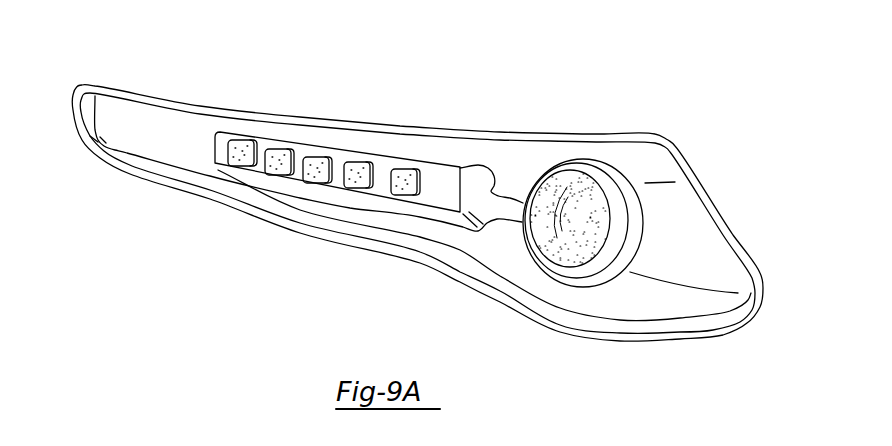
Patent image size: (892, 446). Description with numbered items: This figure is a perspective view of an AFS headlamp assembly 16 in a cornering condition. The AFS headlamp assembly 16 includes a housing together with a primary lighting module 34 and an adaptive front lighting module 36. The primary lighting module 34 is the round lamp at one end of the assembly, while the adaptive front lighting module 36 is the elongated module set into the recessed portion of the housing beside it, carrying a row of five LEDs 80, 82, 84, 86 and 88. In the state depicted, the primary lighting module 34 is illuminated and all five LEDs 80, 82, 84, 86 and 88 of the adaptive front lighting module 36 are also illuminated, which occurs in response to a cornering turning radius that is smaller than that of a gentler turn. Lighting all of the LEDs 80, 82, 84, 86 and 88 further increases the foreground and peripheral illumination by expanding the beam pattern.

The AFS headlamp assembly 16 is at (342, 68).
The primary lighting module 34 is at (587, 188).
The adaptive front lighting module 36 is at (337, 185).
The LED 80 is at (404, 170).
The LED 82 is at (356, 163).
The LED 84 is at (316, 158).
The LED 86 is at (278, 150).
The LED 88 is at (241, 146).